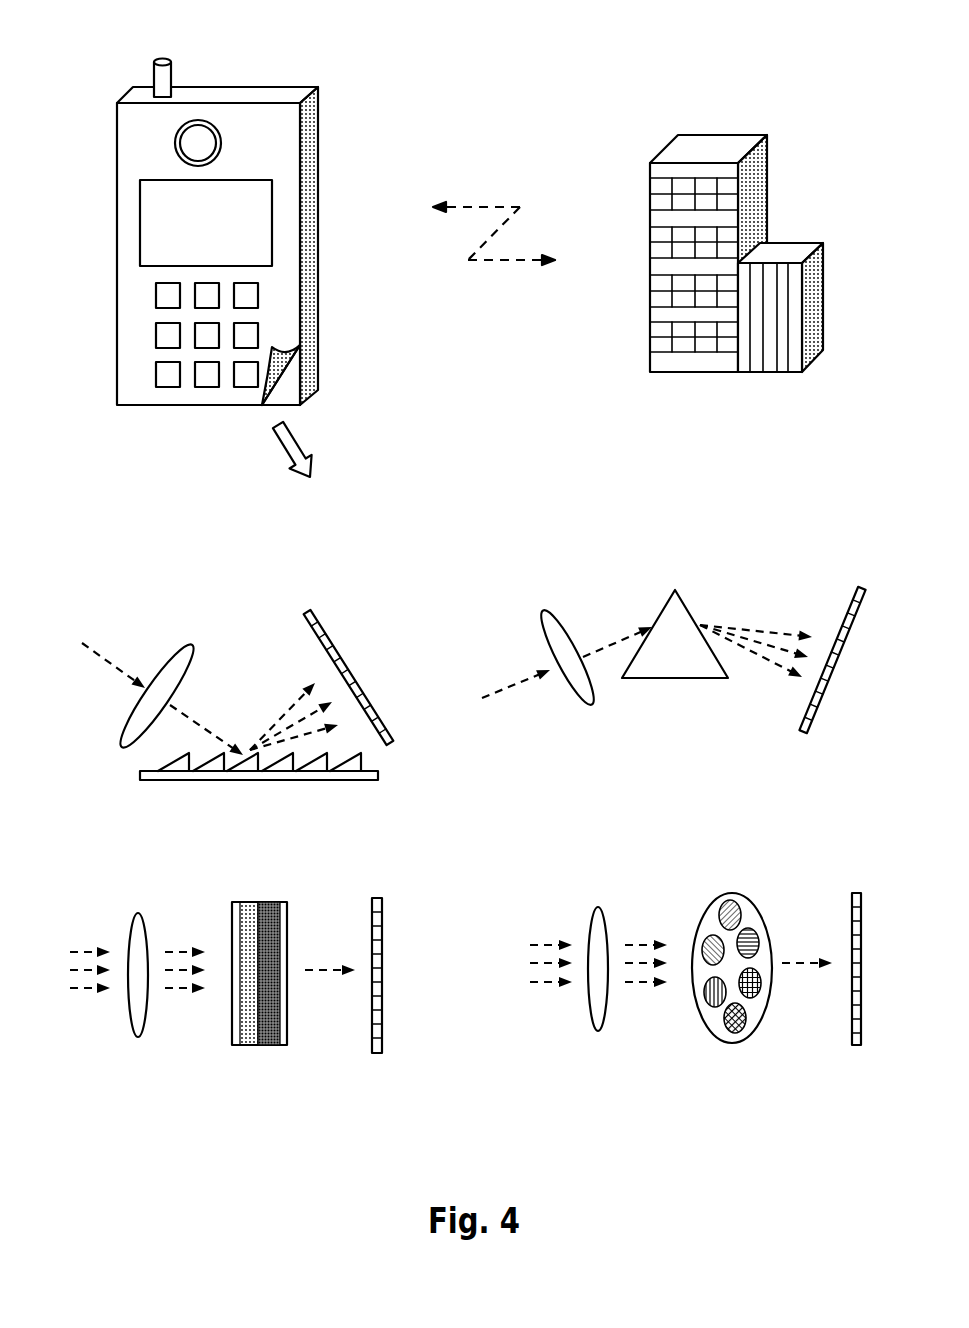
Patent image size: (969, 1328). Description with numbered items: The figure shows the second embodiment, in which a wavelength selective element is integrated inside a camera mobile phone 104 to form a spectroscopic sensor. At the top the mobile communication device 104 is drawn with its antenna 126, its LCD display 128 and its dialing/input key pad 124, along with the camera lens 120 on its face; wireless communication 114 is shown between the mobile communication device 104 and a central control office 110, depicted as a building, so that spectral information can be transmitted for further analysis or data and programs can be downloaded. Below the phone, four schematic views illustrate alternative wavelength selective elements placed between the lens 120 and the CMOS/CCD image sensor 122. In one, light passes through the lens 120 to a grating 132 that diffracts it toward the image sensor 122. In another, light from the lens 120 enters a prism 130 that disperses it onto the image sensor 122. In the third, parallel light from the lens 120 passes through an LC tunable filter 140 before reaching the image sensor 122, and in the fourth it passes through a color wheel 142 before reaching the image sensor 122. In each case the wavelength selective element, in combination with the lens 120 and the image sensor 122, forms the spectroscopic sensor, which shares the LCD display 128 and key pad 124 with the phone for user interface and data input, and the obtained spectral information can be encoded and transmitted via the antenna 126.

The mobile communication device 104 is at (320, 275).
The central control office 110 is at (723, 367).
The wireless communication 114 is at (488, 207).
The lens 120 is at (222, 141).
The CMOS/CCD image sensor 122 is at (325, 628).
The key pad 124 is at (150, 383).
The antenna 126 is at (171, 68).
The LCD display 128 is at (206, 223).
The prism 130 is at (680, 678).
The grating 132 is at (280, 780).
The LC tunable filter 140 is at (260, 1045).
The color wheel 142 is at (732, 1043).